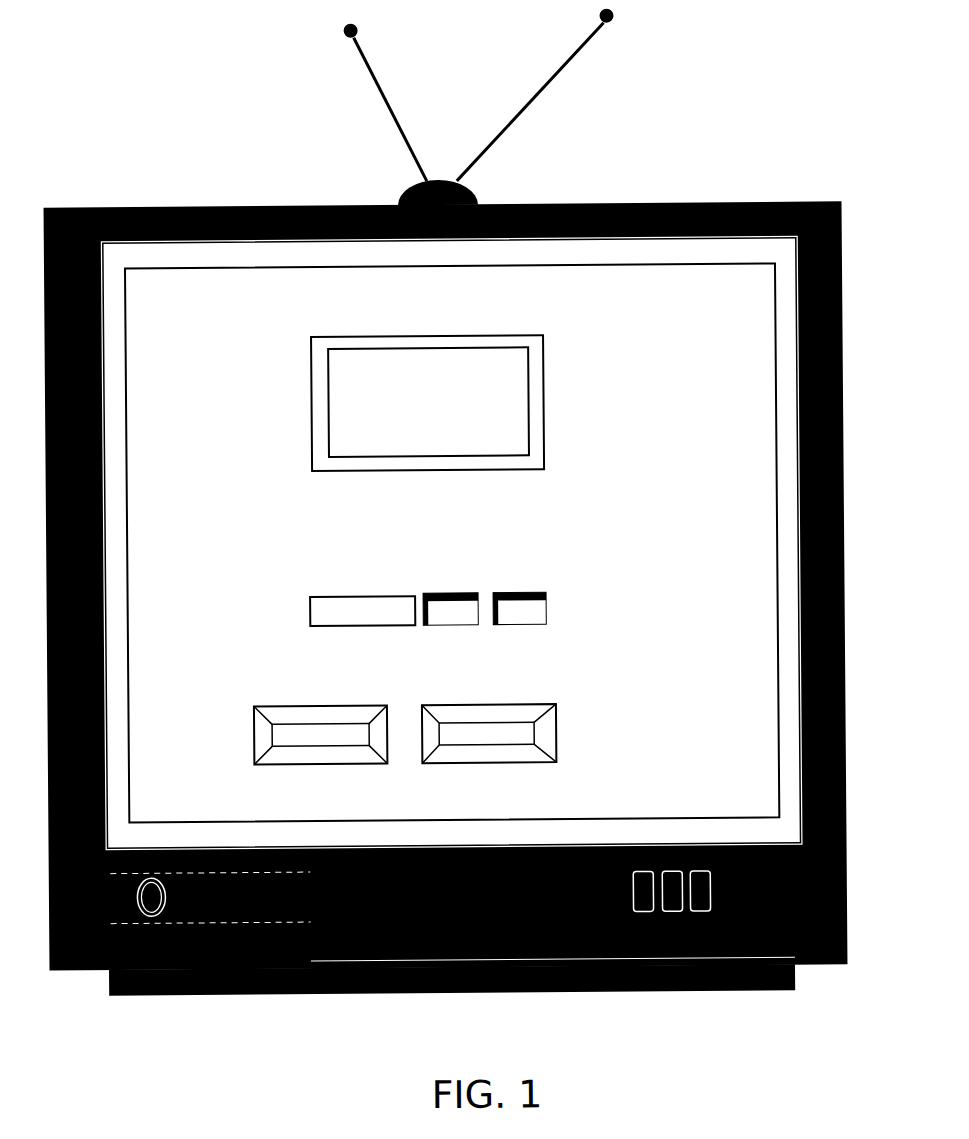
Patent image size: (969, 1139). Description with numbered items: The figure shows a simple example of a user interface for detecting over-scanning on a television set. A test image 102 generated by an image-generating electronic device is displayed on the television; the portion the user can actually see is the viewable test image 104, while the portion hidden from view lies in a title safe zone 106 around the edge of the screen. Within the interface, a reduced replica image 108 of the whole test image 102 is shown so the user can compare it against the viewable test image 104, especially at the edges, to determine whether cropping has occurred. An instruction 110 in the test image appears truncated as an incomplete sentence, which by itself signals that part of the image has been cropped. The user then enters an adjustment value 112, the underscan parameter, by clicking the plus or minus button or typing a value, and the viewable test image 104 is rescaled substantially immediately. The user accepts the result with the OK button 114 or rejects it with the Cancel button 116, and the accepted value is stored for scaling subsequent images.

The test image 102 is at (637, 232).
The viewable test image 104 is at (725, 290).
The title safe zone 106 is at (185, 250).
The reduced replica image 108 is at (427, 403).
The instruction 110 is at (718, 518).
The adjustment value 112 is at (547, 600).
The OK button 114 is at (310, 757).
The Cancel button 116 is at (475, 757).